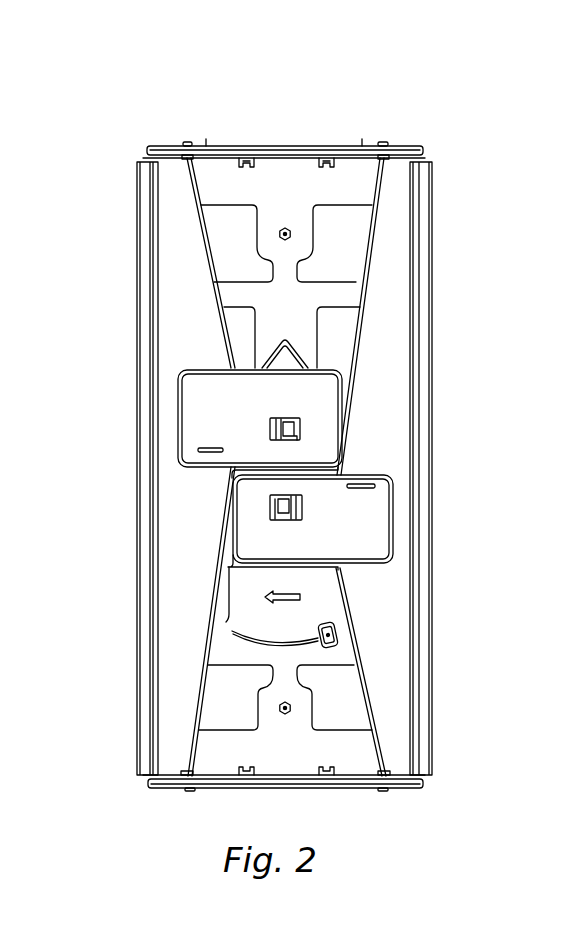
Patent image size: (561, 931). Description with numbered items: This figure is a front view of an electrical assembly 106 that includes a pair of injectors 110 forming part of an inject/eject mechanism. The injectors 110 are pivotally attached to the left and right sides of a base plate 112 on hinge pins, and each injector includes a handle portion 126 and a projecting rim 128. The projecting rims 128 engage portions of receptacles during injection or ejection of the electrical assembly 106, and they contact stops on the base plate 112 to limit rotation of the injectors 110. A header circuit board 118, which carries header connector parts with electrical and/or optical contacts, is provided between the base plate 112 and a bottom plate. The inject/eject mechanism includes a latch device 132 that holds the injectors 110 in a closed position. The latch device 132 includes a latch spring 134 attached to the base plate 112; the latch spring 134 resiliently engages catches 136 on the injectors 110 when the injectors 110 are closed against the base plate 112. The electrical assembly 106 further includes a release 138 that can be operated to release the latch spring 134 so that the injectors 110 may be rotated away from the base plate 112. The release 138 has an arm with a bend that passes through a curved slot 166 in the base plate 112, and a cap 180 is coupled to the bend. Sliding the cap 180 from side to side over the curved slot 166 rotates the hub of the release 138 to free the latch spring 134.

The electrical assembly 106 is at (214, 85).
The injectors 110 is at (185, 299).
The base plate 112 is at (217, 763).
The header circuit board 118 is at (213, 695).
The handle portions 126 is at (225, 403).
The projecting rims 128 is at (425, 347).
The latch device 132 is at (305, 318).
The latch spring 134 is at (270, 428).
The catches 136 is at (300, 432).
The release 138 is at (407, 621).
The curved slot 166 is at (232, 632).
The cap 180 is at (342, 628).